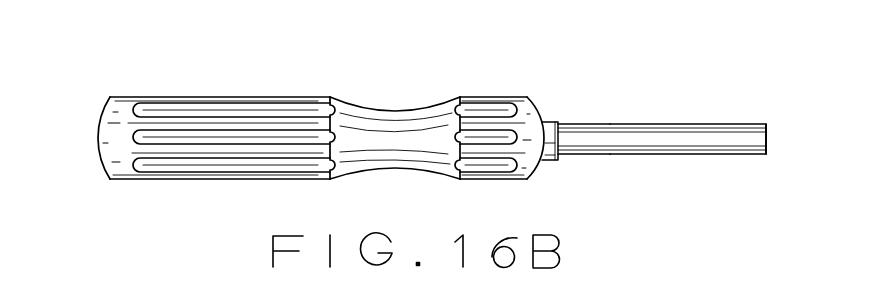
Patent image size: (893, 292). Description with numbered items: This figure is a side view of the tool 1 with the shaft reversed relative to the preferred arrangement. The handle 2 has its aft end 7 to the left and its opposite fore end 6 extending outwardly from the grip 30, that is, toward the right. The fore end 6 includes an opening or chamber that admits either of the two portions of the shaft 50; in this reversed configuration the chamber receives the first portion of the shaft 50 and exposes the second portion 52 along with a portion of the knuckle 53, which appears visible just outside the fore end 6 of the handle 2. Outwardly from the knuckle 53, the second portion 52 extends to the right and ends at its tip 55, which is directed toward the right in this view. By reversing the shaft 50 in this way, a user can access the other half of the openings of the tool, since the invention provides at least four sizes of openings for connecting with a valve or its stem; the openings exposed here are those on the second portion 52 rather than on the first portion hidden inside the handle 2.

The screwdriver tool 1 is at (181, 83).
The handle 2 is at (306, 97).
The aft end 7 is at (99, 135).
The grip 30 is at (391, 108).
The fore end 6 is at (538, 98).
The knuckle 53 is at (555, 120).
The second portion 52 is at (615, 122).
The shaft 50 is at (689, 108).
The tip 55 is at (767, 123).